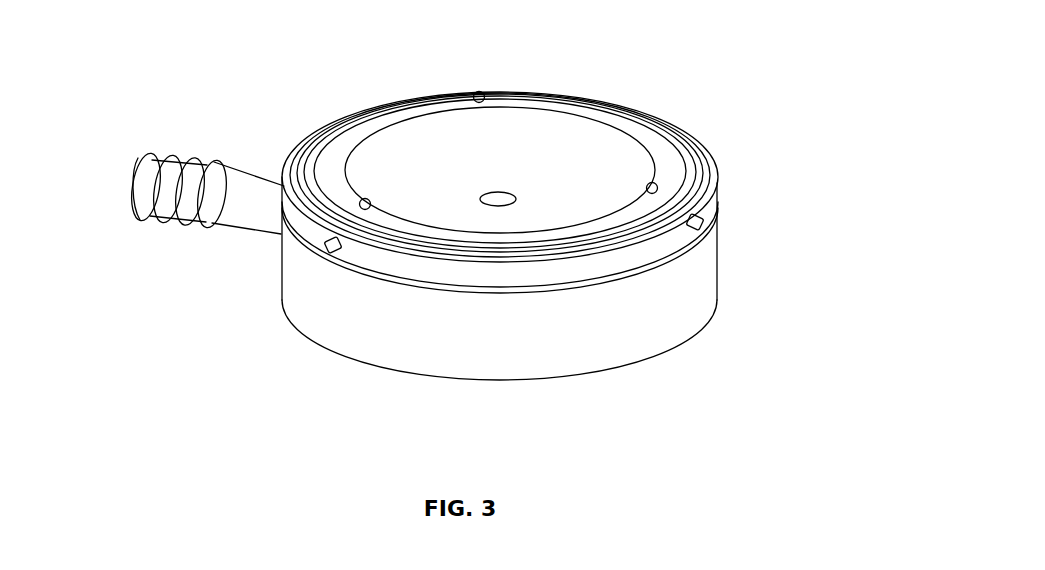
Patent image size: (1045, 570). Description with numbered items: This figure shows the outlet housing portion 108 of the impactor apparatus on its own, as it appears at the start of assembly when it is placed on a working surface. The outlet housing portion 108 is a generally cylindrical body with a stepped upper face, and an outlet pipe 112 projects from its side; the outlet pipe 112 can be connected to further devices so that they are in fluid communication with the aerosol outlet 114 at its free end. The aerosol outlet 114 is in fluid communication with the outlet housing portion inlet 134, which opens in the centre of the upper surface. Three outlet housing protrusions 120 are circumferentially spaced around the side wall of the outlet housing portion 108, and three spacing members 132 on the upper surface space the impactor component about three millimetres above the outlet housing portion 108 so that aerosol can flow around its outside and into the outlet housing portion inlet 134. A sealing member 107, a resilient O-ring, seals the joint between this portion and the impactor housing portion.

The sealing member 107 is at (530, 258).
The outlet housing portion 108 is at (716, 262).
The outlet pipe 112 is at (243, 173).
The aerosol outlet 114 is at (114, 188).
The outlet housing protrusion 120 is at (338, 253).
The spacing member 132 is at (481, 91).
The outlet housing portion inlet 134 is at (533, 207).